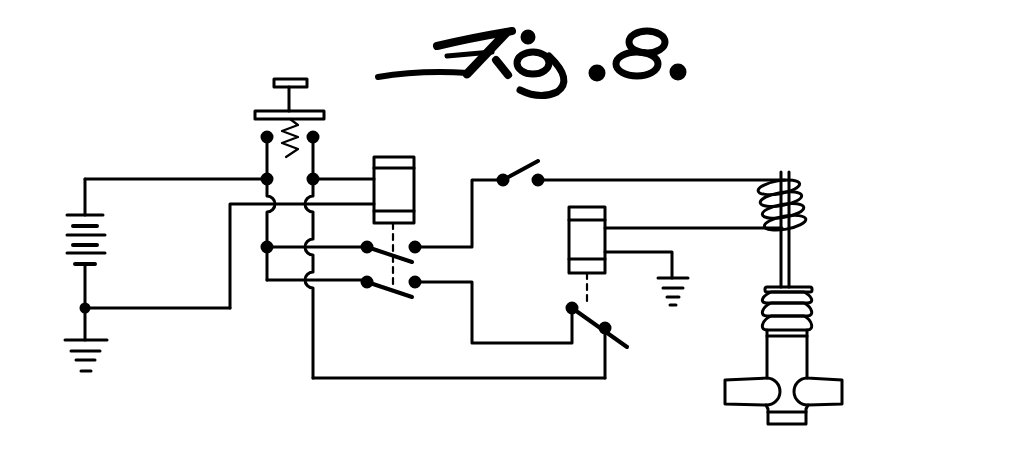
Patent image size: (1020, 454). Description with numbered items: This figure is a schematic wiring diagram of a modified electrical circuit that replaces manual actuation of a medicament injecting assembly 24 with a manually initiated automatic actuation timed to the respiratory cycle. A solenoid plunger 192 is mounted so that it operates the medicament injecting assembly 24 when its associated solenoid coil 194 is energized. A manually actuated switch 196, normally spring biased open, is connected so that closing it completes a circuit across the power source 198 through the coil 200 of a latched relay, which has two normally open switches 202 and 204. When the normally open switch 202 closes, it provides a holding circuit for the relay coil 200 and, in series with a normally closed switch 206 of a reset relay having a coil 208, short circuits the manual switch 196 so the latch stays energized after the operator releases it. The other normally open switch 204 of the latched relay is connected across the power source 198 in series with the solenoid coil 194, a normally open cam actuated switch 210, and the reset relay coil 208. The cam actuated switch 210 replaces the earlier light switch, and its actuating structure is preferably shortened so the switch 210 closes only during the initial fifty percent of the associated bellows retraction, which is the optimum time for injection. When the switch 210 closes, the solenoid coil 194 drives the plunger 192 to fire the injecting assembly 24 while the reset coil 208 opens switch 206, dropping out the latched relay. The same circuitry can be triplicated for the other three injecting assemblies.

The medicament injecting assembly 24 is at (810, 368).
The solenoid plunger 192 is at (785, 267).
The solenoid coil 194 is at (803, 202).
The manually actuated switch 196 is at (296, 83).
The power source 198 is at (68, 235).
The coil of latched relay 200 is at (450, 150).
The normally open switch 202 is at (368, 290).
The normally open switch 204 is at (358, 248).
The normally closed switch 206 is at (624, 341).
The coil of reset relay 208 is at (568, 252).
The cam actuated switch 210 is at (523, 160).